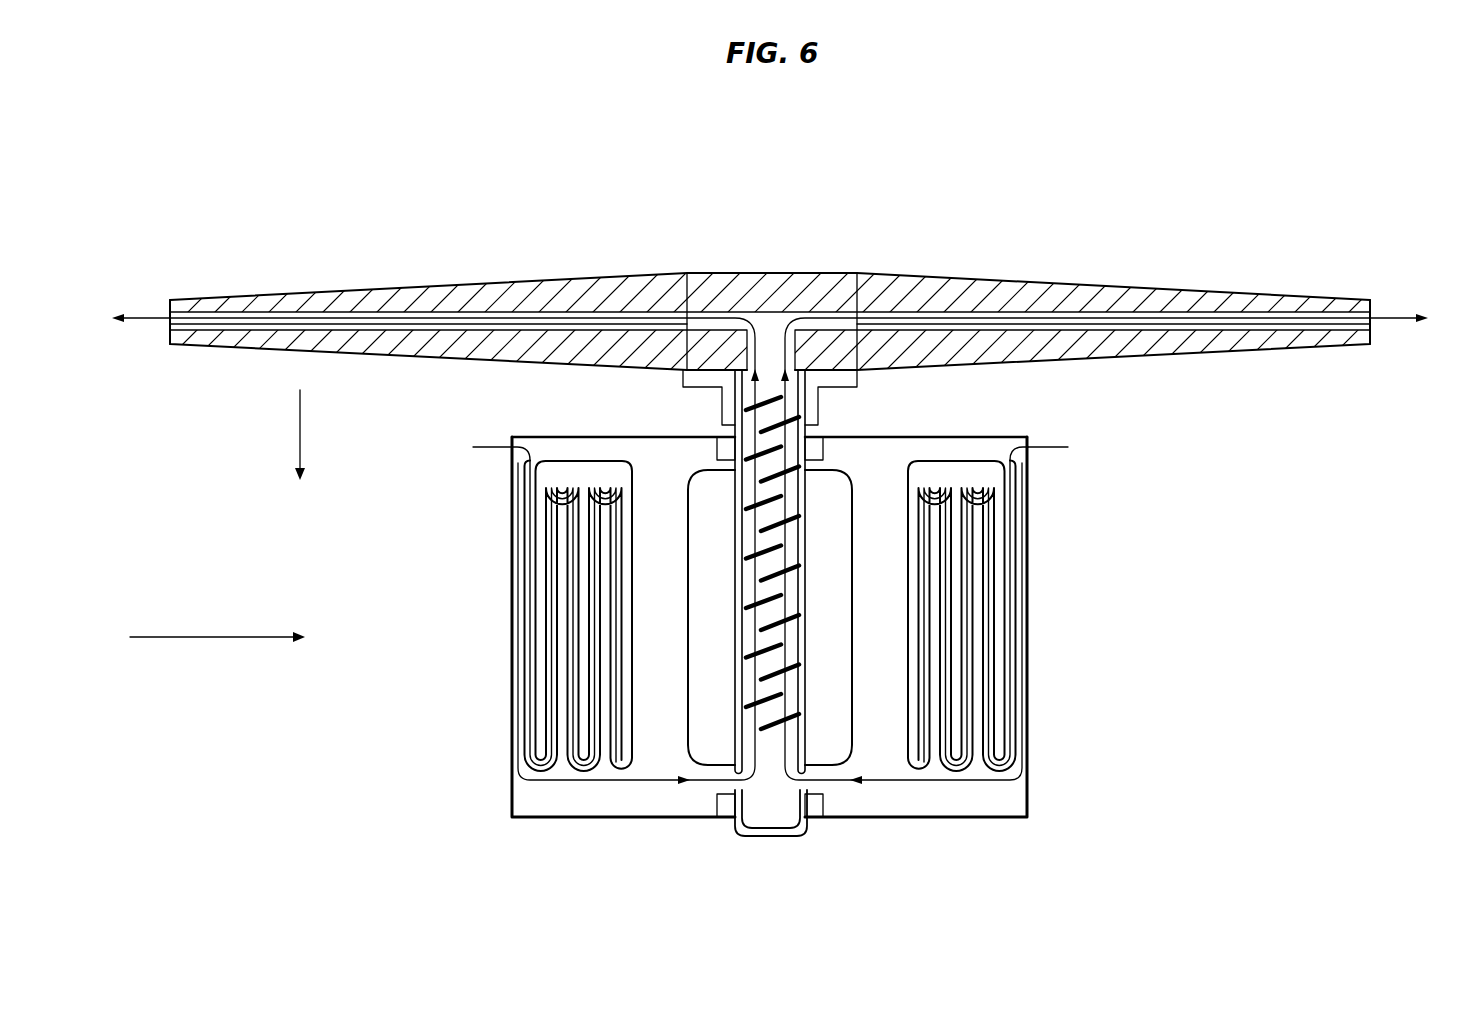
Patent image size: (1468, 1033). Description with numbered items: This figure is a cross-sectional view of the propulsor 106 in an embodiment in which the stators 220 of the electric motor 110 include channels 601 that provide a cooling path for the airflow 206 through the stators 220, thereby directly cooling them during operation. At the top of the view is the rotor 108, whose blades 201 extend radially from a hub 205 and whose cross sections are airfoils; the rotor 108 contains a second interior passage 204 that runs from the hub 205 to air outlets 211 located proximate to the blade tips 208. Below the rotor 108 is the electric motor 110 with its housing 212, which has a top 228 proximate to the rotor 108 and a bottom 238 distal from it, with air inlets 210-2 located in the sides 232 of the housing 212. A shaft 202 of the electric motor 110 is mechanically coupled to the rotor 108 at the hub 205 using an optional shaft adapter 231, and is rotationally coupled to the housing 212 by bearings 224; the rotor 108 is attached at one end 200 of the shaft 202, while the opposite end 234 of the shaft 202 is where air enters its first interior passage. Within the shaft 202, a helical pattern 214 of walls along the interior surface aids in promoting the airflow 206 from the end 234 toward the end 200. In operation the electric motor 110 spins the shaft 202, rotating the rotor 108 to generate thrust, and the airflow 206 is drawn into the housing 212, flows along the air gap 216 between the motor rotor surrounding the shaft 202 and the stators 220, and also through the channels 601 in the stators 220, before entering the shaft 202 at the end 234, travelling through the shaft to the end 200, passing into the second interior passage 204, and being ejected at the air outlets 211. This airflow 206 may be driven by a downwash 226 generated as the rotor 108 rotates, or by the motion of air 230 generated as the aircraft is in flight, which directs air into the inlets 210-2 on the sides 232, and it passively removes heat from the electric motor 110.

The propulsor 106 is at (940, 170).
The rotor 108 is at (846, 241).
The electric motor 110 is at (1166, 725).
The end of shaft 200 is at (772, 320).
The blades 201 is at (458, 290).
The shaft 202 is at (736, 830).
The second interior passage 204 is at (892, 316).
The hub 205 is at (683, 290).
The airflow 206 is at (140, 312).
The blade tips 208 is at (170, 256).
The air inlets 210-2 is at (503, 432).
The air outlets 211 is at (155, 334).
The housing 212 is at (497, 790).
The helical pattern 214 is at (792, 578).
The air gap 216 is at (644, 556).
The stator 220 is at (580, 770).
The bearings 224 is at (820, 447).
The downwash 226 is at (302, 418).
The top 228 is at (570, 422).
The motion of air 230 is at (217, 664).
The shaft adapter 231 is at (706, 383).
The sides 232 is at (497, 545).
The end of shaft 234 is at (765, 890).
The bottom 238 is at (990, 834).
The channels 601 is at (1020, 592).